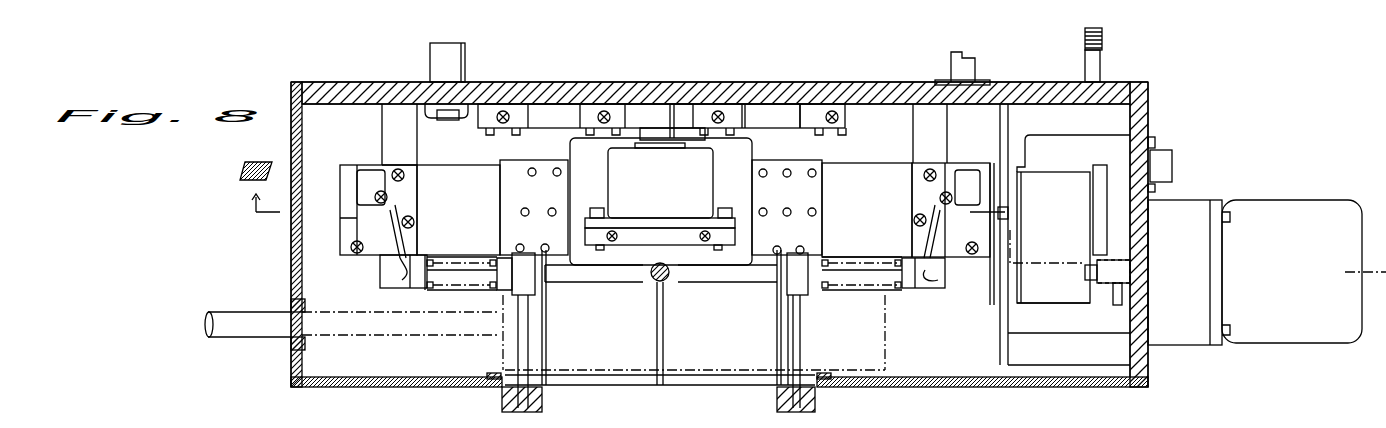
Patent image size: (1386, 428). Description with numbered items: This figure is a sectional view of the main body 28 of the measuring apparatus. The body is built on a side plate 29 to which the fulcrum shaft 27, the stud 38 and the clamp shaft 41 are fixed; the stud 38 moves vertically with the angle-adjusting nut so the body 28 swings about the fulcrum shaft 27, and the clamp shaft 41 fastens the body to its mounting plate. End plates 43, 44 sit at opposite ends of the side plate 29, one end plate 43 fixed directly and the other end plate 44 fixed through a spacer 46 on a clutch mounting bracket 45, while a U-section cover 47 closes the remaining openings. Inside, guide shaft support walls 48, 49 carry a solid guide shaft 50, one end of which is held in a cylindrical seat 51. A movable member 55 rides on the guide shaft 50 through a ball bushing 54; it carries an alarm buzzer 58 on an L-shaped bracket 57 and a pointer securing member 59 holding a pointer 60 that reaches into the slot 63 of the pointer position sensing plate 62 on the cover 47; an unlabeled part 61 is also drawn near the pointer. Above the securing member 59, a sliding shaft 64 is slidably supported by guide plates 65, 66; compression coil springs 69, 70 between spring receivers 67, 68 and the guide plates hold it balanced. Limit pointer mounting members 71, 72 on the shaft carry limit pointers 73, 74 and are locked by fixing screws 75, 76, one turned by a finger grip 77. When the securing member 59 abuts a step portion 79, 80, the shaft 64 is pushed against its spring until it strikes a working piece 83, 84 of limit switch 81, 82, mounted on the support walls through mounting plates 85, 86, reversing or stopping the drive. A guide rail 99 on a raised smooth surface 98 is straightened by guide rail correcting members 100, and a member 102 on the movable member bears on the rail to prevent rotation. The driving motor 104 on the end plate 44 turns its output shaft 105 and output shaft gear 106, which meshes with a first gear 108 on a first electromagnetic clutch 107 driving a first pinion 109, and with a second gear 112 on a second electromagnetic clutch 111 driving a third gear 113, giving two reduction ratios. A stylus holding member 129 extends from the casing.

The fulcrum shaft 27 is at (432, 58).
The main body of the measuring apparatus 28 is at (339, 70).
The side plate 29 is at (590, 84).
The stud 38 is at (968, 68).
The clamp shaft 41 is at (1097, 62).
The end plate 43 is at (292, 240).
The end plate 44 is at (1142, 130).
The clutch mounting bracket 45 is at (1118, 115).
The spacer 46 is at (1095, 352).
The cover 47 is at (985, 386).
The guide shaft support wall 48 is at (390, 128).
The guide shaft support wall 49 is at (918, 128).
The guide shaft 50 is at (878, 180).
The cylindrical seat 51 is at (413, 160).
The ball bushing 54 is at (805, 165).
The movable member 55 is at (755, 152).
The L-shaped bracket 57 is at (732, 245).
The alarm buzzer 58 is at (700, 202).
The pointer securing member 59 is at (655, 280).
The pointer 60 is at (664, 340).
The support rod 61 is at (663, 282).
The pointer position sensing plate 62 is at (820, 395).
The slot 63 is at (740, 386).
The sliding shaft 64 is at (700, 283).
The guide plate 65 is at (425, 262).
The guide plate 66 is at (910, 290).
The spring receiver 67 is at (500, 310).
The spring receiver 68 is at (861, 332).
The compression coil spring 69 is at (438, 288).
The compression coil spring 70 is at (893, 290).
The limit pointer mounting member 71 is at (503, 333).
The limit pointer mounting member 72 is at (808, 300).
The limit pointer 73 is at (547, 333).
The limit pointer 74 is at (777, 335).
The fixing screw 75 is at (530, 355).
The fixing screw 76 is at (800, 357).
The finger grip 77 is at (545, 410).
The step portion 79 is at (540, 290).
The step portion 80 is at (780, 287).
The limit switch 81 is at (360, 230).
The limit switch 82 is at (985, 185).
The working piece 83 is at (387, 268).
The working piece 84 is at (942, 270).
The mounting plate 85 is at (348, 178).
The mounting plate 86 is at (1002, 195).
The smooth surface 98 is at (672, 104).
The guide rail 99 is at (775, 125).
The guide rail correcting member 100 is at (510, 110).
The member for preventing the movable member from rotating 102 is at (690, 130).
The driving motor 104 is at (1285, 212).
The output shaft 105 is at (1088, 276).
The output shaft gear 106 is at (1105, 284).
The first electromagnetic clutch 107 is at (1077, 180).
The first gear 108 is at (1100, 158).
The first pinion 109 is at (1018, 222).
The second electromagnetic clutch 111 is at (1072, 298).
The second gear 112 is at (1120, 305).
The third gear 113 is at (991, 300).
The stylus holding member 129 is at (427, 343).